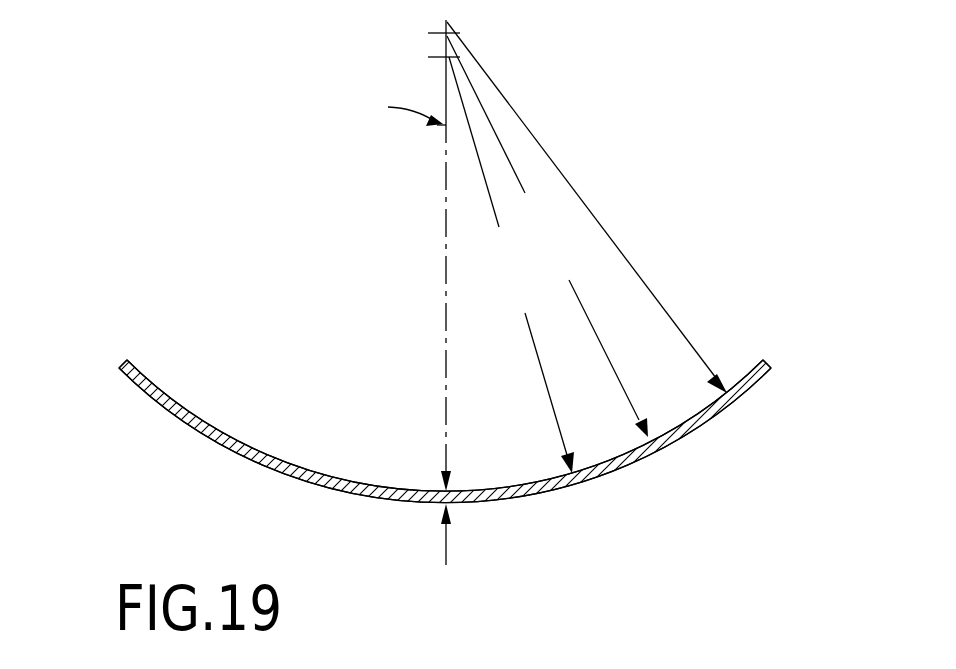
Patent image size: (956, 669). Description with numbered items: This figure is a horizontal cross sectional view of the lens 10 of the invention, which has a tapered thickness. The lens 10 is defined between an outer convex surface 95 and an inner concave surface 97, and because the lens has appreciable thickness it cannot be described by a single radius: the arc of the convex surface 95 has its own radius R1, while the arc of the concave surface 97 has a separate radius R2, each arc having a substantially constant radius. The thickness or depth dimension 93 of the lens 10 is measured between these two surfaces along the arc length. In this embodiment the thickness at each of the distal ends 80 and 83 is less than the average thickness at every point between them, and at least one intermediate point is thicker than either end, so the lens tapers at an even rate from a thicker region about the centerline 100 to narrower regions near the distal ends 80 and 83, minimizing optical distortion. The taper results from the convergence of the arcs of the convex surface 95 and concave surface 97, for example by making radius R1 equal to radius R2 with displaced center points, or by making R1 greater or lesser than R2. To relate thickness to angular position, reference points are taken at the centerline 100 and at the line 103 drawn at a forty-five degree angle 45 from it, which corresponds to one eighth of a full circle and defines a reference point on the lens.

The lens 10 is at (204, 472).
The distal end 80 is at (127, 358).
The distal end 83 is at (766, 358).
The thickness or depth dimension 93 is at (443, 558).
The outer convex surface 95 is at (640, 458).
The inner concave surface 97 is at (322, 470).
The centerline 100 is at (446, 287).
The 45° line 103 is at (587, 204).
The 45° angle 45 is at (516, 95).
The radius of the outer convex surface R1 is at (511, 265).
The radius of the inner concave surface R2 is at (547, 236).